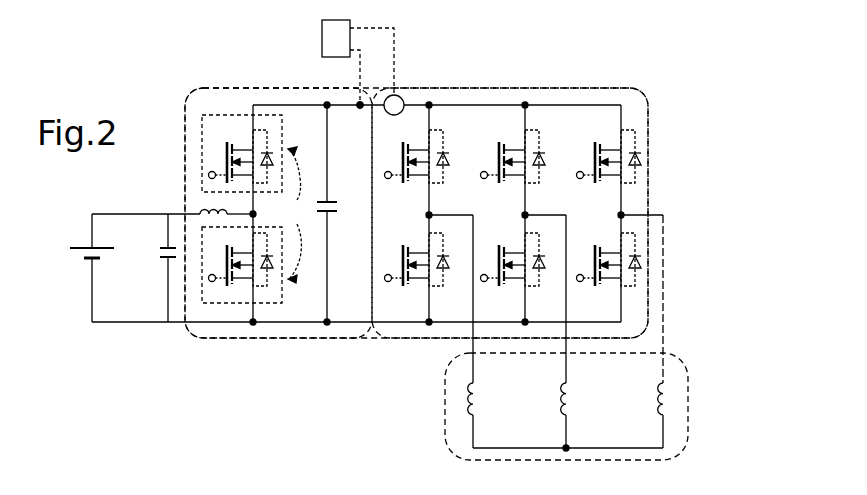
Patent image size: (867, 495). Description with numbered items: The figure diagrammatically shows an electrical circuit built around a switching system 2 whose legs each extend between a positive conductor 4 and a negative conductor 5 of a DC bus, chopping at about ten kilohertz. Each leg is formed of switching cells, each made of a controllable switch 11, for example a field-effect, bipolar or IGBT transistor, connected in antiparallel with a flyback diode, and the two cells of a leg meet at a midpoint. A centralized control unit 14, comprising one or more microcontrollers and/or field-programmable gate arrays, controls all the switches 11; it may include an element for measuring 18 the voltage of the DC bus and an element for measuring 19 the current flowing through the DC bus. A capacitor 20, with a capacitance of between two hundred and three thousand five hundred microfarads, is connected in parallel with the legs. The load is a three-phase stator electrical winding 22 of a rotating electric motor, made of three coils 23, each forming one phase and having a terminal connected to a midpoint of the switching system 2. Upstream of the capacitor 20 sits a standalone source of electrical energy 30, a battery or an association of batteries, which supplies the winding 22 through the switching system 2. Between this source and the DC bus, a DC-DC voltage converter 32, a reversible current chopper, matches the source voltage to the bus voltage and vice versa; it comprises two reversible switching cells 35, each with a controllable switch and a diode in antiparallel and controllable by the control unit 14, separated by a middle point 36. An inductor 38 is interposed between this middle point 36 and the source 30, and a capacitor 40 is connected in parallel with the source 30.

The switching system 2 is at (598, 88).
The positive conductor 4 is at (295, 105).
The negative conductor 5 is at (408, 340).
The controllable switch 11 is at (453, 177).
The control unit 14 is at (330, 33).
The element for measuring the voltage 18 is at (360, 108).
The element for measuring the current 19 is at (404, 98).
The capacitor 20 is at (333, 213).
The stator electrical winding 22 is at (690, 420).
The coil 23 is at (480, 405).
The standalone source of electrical energy 30 is at (92, 262).
The DC-DC voltage converter 32 is at (288, 343).
The switching cells 35 is at (298, 215).
The middle point 36 is at (250, 215).
The inductor 38 is at (200, 212).
The capacitor 40 is at (168, 262).